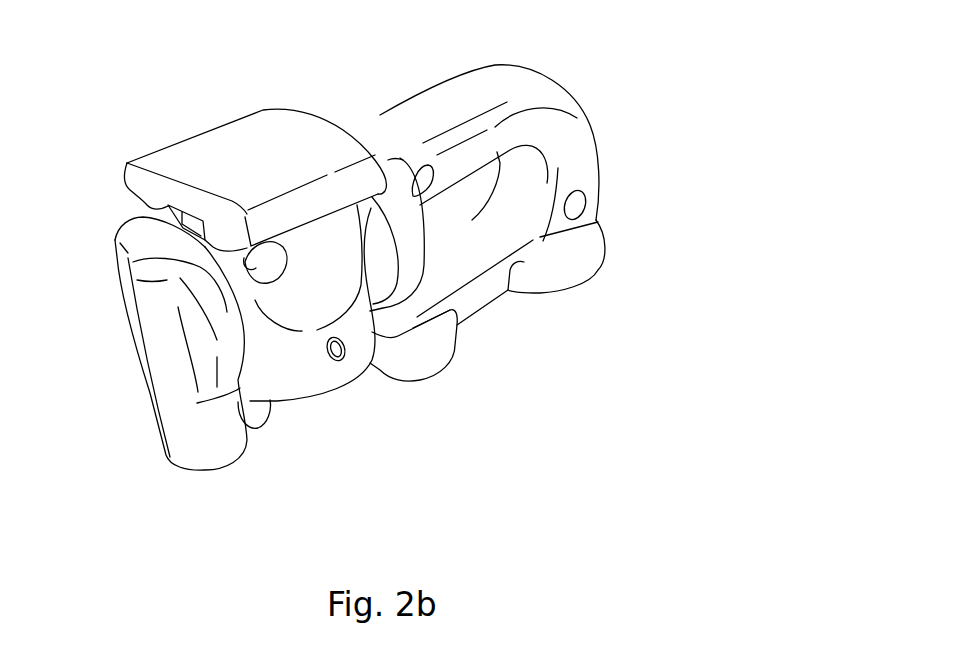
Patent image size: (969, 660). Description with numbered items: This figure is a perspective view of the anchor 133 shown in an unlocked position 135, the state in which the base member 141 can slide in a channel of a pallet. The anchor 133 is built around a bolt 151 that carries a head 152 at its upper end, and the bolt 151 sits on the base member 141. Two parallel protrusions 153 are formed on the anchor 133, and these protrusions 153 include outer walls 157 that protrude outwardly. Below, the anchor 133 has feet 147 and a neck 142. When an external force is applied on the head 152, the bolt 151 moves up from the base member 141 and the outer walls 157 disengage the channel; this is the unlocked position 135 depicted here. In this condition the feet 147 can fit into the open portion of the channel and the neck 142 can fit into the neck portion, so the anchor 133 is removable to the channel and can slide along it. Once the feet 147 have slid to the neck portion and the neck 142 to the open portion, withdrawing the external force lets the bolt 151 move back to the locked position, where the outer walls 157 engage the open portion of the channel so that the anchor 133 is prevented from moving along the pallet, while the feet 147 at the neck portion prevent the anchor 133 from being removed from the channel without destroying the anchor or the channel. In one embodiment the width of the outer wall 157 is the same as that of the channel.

The anchor 133 is at (492, 389).
The unlocked position 135 is at (347, 418).
The base member 141 is at (541, 93).
The neck 142 is at (277, 412).
The feet 147 is at (440, 345).
The bolt 151 is at (266, 112).
The head 152 is at (208, 150).
The parallel protrusions 153 is at (243, 290).
The outer walls 157 is at (311, 374).